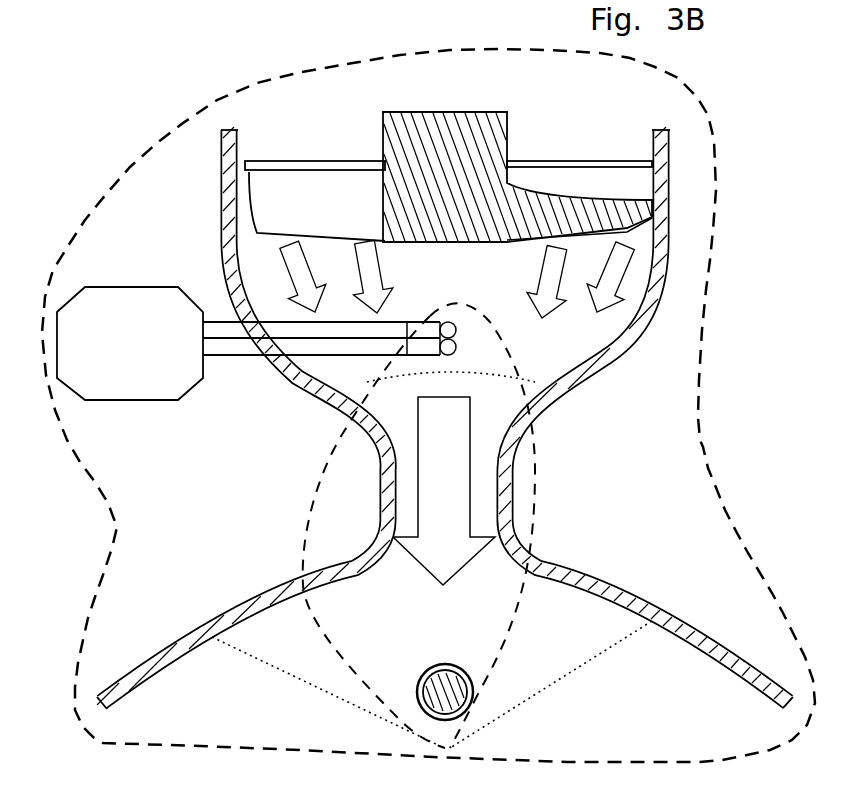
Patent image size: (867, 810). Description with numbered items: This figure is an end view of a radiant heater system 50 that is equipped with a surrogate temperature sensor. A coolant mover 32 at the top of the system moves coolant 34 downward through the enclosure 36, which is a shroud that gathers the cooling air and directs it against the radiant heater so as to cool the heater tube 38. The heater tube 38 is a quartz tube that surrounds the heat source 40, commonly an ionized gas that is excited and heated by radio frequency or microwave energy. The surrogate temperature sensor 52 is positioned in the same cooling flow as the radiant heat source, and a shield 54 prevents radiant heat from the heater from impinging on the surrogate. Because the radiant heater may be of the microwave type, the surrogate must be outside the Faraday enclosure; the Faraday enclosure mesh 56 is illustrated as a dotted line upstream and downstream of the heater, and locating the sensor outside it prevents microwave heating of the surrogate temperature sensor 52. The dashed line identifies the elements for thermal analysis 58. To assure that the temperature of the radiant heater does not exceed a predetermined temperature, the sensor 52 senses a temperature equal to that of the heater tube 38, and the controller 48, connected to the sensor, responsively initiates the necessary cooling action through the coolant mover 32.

The coolant mover 32 is at (517, 170).
The coolant 34 is at (457, 411).
The enclosure 36 is at (505, 488).
The heater tube 38 is at (463, 672).
The heat source 40 is at (437, 693).
The controller 48 is at (248, 343).
The radiant heater system 50 is at (428, 396).
The surrogate temperature sensor 52 is at (457, 331).
The shield 54 is at (457, 349).
The Faraday enclosure mesh 56 is at (360, 390).
The elements for thermal analysis 58 is at (411, 525).